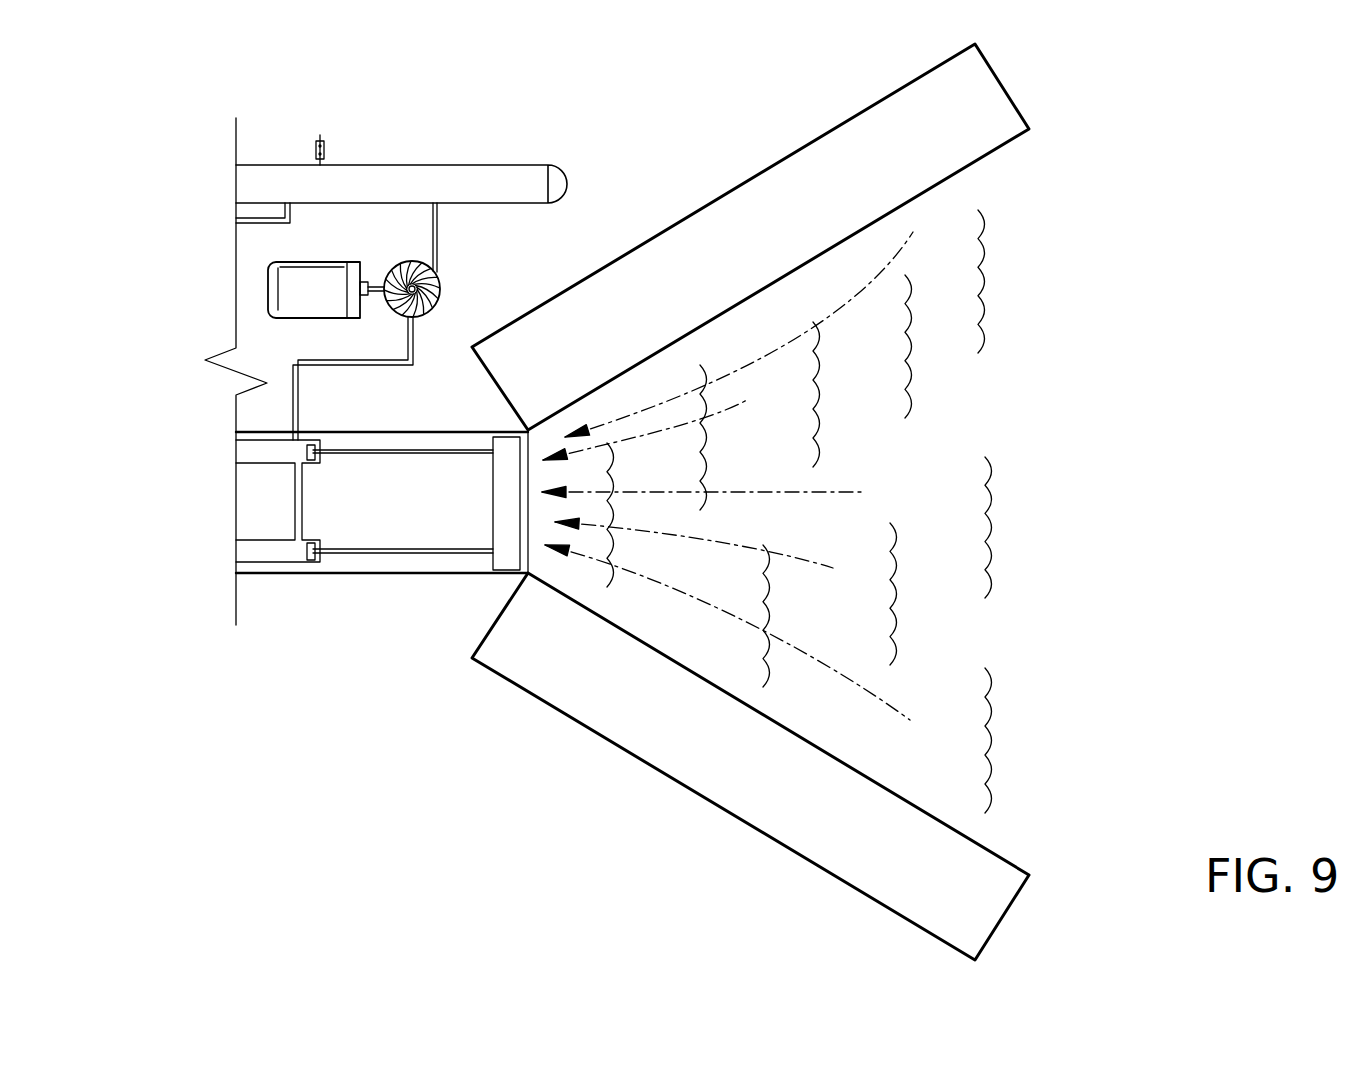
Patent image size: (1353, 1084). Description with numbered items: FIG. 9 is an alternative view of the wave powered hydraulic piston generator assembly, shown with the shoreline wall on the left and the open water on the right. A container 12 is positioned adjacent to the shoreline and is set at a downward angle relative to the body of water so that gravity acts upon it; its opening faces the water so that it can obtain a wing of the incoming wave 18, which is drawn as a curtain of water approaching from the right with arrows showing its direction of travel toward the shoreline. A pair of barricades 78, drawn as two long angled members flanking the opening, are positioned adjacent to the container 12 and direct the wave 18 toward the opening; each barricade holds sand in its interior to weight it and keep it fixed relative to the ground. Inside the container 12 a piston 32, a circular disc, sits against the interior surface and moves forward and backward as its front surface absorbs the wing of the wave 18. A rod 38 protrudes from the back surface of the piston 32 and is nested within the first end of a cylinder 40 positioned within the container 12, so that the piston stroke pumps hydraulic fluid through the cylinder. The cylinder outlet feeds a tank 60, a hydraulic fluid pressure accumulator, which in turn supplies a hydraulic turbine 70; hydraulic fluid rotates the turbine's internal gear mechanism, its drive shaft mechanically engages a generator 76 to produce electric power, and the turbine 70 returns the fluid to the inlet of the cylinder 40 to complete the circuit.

The container 12 is at (410, 563).
The wave 18 is at (897, 573).
The piston 32 is at (495, 496).
The rod 38 is at (397, 548).
The cylinder 40 is at (242, 453).
The tank 60 is at (466, 175).
The turbine 70 is at (440, 285).
The generator 76 is at (277, 287).
The barricades 78 is at (968, 133).